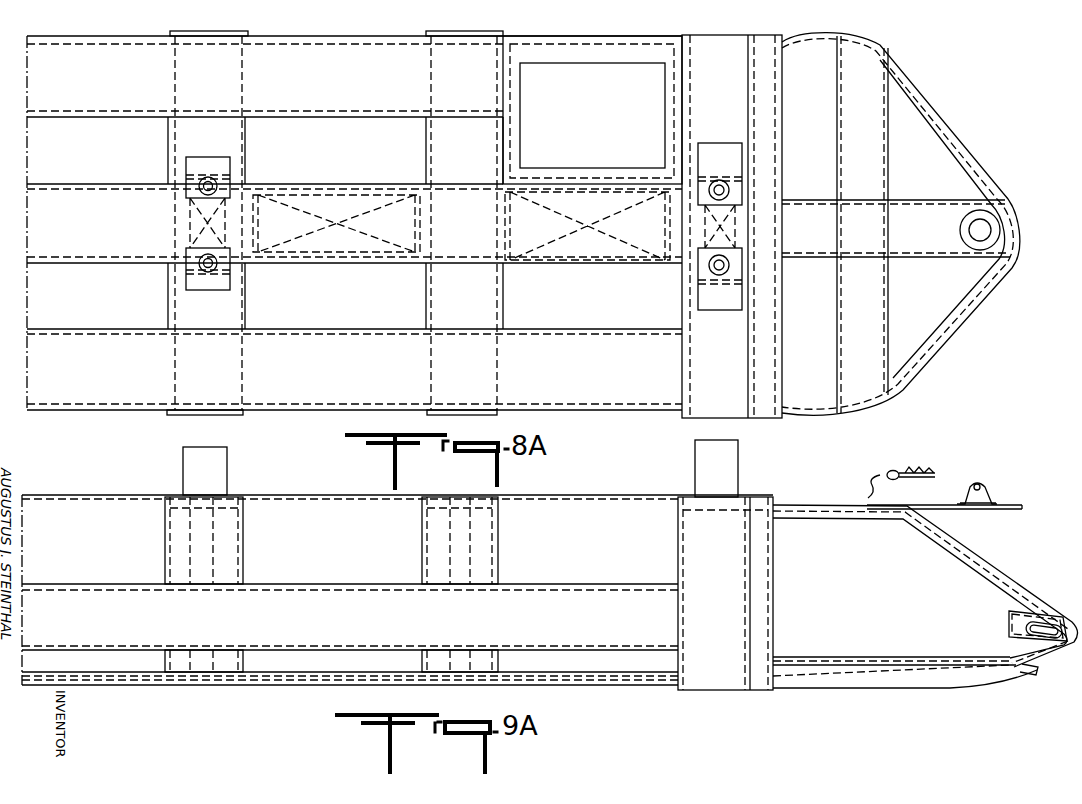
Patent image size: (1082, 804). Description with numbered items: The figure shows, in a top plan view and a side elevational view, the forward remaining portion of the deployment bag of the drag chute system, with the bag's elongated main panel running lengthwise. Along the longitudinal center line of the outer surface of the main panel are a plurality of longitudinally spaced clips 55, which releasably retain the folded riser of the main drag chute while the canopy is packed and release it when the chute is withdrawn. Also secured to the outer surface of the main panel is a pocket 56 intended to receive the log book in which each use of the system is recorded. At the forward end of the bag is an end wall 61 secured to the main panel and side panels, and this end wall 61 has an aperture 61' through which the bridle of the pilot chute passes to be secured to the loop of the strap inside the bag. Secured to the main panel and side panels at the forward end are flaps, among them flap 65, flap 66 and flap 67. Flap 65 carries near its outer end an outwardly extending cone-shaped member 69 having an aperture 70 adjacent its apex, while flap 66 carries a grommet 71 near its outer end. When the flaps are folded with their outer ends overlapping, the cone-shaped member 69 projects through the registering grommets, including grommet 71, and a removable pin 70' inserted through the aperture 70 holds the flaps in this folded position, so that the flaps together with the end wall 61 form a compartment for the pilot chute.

In FIG. 8A, the clip 55 is at (718, 158).
In FIG. 9A, the clip 55 is at (232, 478).
In FIG. 8A, the pocket 56 is at (622, 72).
In FIG. 9A, the end wall 61 is at (725, 593).
In FIG. 9A, the aperture 61' is at (727, 593).
In FIG. 9A, the flap 65 is at (935, 506).
In FIG. 9A, the flap 66 is at (932, 603).
In FIG. 9A, the flap 67 is at (998, 678).
In FIG. 9A, the cone-shaped member 69 is at (992, 497).
In FIG. 9A, the aperture 70 is at (975, 487).
In FIG. 9A, the removable pin 70' is at (904, 471).
In FIG. 9A, the grommet 71 is at (1032, 613).